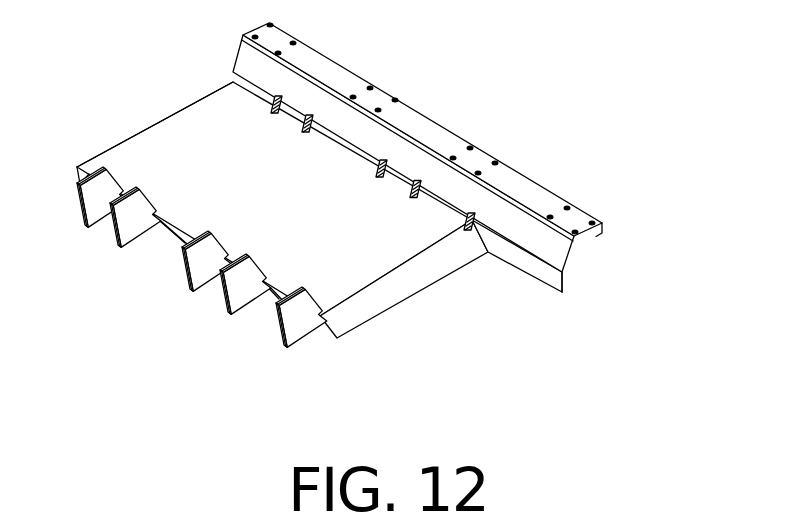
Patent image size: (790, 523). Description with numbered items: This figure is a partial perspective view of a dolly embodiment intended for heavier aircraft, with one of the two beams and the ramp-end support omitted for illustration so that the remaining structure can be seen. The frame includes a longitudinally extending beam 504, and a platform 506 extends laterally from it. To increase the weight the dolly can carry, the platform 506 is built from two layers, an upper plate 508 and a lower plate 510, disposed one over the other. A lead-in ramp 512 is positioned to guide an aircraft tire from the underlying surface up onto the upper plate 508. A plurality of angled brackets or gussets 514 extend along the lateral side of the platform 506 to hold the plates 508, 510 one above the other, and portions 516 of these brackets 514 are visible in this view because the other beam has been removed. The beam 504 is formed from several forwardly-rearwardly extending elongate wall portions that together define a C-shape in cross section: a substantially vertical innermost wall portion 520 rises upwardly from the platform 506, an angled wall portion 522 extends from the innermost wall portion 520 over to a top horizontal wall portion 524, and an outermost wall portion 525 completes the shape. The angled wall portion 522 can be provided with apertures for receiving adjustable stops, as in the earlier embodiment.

The beam 504 is at (470, 147).
The platform 506 is at (291, 214).
The upper plate 508 is at (142, 151).
The plate 510 is at (167, 228).
The lead-in ramp 512 is at (377, 303).
The angled bracket 514 is at (202, 277).
The bracket portion 516 is at (400, 160).
The innermost wall portion 520 is at (565, 281).
The angled wall portion 522 is at (560, 252).
The top horizontal wall portion 524 is at (523, 191).
The outermost wall portion 525 is at (605, 230).